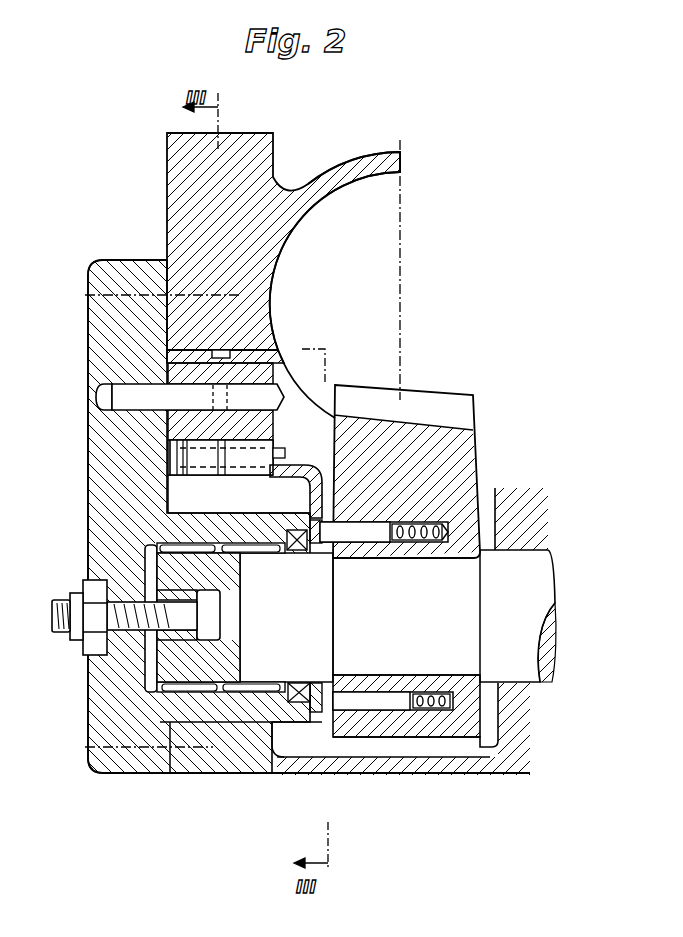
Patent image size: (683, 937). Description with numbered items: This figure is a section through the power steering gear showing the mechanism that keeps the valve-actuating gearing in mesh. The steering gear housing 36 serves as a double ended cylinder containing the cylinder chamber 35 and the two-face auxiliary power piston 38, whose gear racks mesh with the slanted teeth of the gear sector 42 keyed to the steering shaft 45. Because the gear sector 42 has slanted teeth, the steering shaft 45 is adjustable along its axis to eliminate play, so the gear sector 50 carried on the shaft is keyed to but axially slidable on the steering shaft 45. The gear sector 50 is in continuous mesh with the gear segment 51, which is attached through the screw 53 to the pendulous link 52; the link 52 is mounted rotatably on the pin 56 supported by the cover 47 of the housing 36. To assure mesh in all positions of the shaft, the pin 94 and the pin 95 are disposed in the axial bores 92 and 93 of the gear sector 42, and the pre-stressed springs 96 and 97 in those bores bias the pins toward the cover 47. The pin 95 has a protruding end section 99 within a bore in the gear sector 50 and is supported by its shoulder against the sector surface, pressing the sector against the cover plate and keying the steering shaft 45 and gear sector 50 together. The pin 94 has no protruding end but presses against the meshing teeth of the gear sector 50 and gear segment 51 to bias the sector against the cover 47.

The cylinder chamber 35 is at (484, 745).
The steering gear housing 36 is at (262, 172).
The auxiliary power piston 38 is at (381, 190).
The gear sector 42 is at (436, 430).
The steering shaft 45 is at (262, 672).
The cover 47 is at (133, 766).
The gear sector 50 is at (312, 548).
The gear segment 51 is at (298, 466).
The pendulous link 52 is at (278, 350).
The screw 53 is at (170, 457).
The pin 56 is at (120, 400).
The axial bore 92 is at (435, 520).
The axial bore 93 is at (387, 708).
The pin 94 is at (364, 530).
The pin 95 is at (366, 697).
The spring 96 is at (452, 512).
The spring 97 is at (434, 713).
The protruding end section 99 is at (316, 704).